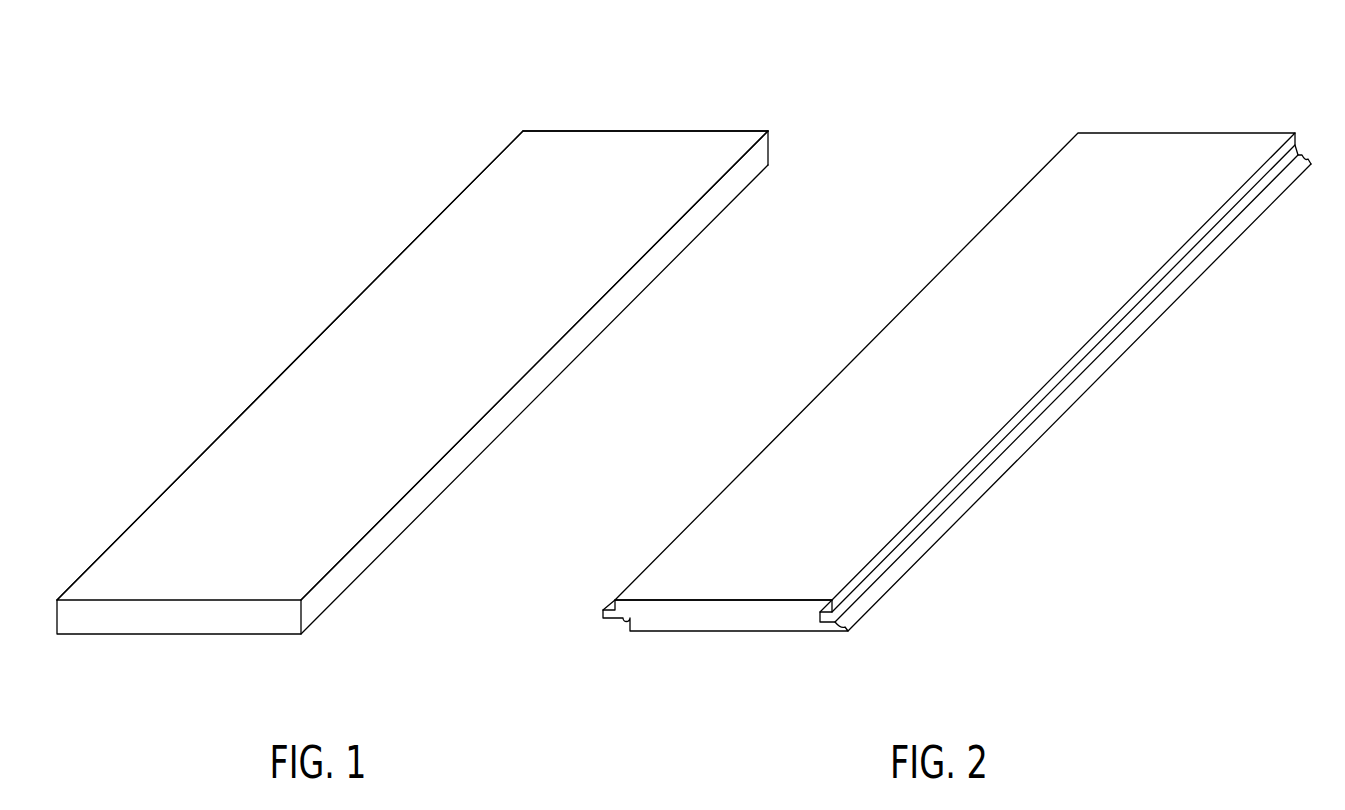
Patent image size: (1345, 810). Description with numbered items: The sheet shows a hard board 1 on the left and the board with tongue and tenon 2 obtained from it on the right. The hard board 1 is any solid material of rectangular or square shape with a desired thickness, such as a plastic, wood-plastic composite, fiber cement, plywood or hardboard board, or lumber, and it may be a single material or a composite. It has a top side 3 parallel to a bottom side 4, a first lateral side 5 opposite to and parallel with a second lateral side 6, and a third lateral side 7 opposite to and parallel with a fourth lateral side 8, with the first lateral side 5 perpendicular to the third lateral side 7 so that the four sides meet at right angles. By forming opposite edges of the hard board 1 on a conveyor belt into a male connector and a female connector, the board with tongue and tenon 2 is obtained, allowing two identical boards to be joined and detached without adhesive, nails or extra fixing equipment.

In FIG. 1, the hard board 1 is at (412, 354).
In FIG. 2, the board with tongue and tenon 2 is at (996, 116).
In FIG. 1, the top side 3 is at (372, 295).
In FIG. 1, the bottom side 4 is at (553, 383).
In FIG. 1, the first lateral side 5 is at (265, 392).
In FIG. 1, the second lateral side 6 is at (383, 537).
In FIG. 1, the third lateral side 7 is at (187, 620).
In FIG. 1, the fourth lateral side 8 is at (627, 131).